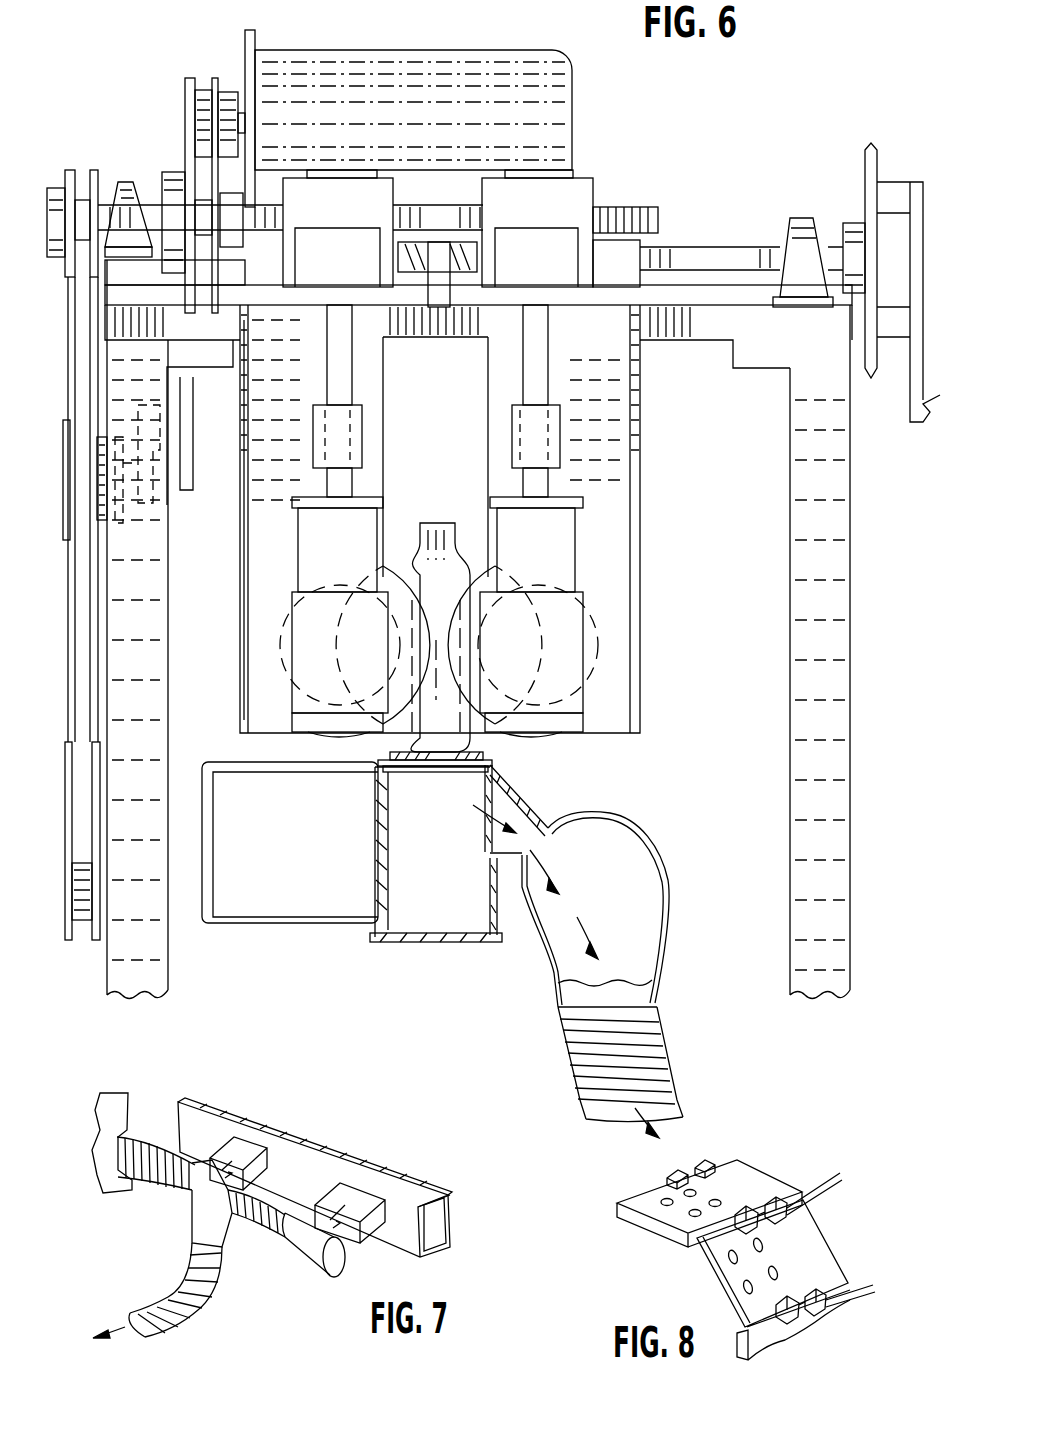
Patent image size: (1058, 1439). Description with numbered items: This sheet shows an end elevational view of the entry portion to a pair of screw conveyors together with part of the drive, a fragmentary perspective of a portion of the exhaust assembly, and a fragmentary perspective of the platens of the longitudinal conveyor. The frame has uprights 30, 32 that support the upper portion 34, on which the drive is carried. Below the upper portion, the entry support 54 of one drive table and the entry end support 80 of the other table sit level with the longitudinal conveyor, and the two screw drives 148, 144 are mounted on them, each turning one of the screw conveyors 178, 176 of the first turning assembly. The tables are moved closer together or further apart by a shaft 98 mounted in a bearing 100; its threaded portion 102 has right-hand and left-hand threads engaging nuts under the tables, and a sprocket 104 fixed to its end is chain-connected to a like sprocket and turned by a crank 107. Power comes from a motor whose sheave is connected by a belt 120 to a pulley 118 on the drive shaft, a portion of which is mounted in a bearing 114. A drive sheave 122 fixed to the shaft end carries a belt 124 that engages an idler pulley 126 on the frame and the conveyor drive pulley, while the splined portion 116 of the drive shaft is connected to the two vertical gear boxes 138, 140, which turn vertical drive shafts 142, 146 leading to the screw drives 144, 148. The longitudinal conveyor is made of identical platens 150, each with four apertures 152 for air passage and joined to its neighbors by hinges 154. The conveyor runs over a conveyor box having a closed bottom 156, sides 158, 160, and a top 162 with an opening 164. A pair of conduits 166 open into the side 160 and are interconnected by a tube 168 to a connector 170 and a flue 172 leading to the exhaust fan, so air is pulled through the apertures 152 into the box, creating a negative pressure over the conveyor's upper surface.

In FIG. 6, the upright 30 is at (140, 975).
In FIG. 6, the upright 32 is at (823, 866).
In FIG. 6, the upper portion 34 is at (687, 350).
In FIG. 6, the entry support 54 is at (260, 487).
In FIG. 6, the entry end support 80 is at (630, 548).
In FIG. 6, the shaft 98 is at (700, 258).
In FIG. 6, the bearing 100 is at (805, 240).
In FIG. 6, the threaded portion 102 is at (410, 266).
In FIG. 6, the sprocket 104 is at (877, 150).
In FIG. 6, the crank 107 is at (915, 425).
In FIG. 6, the bearing 114 is at (125, 205).
In FIG. 6, the splined portion 116 is at (430, 215).
In FIG. 6, the pulley 118 is at (185, 110).
In FIG. 6, the belt 120 is at (70, 850).
In FIG. 6, the drive sheave 122 is at (65, 185).
In FIG. 6, the belt 124 is at (85, 597).
In FIG. 6, the idler pulley 126 is at (65, 518).
In FIG. 6, the vertical gear box 138 is at (560, 205).
In FIG. 6, the vertical gear box 140 is at (320, 200).
In FIG. 6, the vertical drive shaft 142 is at (548, 370).
In FIG. 6, the screw drive 144 is at (555, 545).
In FIG. 6, the vertical drive shaft 146 is at (342, 372).
In FIG. 6, the screw drive 148 is at (365, 530).
In FIG. 6, the platen 150 is at (392, 754).
In FIG. 8, the platen 150 is at (757, 1190).
In FIG. 8, the aperture 152 is at (718, 1200).
In FIG. 8, the hinge 154 is at (787, 1200).
In FIG. 6, the closed bottom 156 is at (410, 943).
In FIG. 6, the side 158 is at (375, 865).
In FIG. 6, the side 160 is at (490, 900).
In FIG. 7, the side 160 is at (410, 1232).
In FIG. 6, the top 162 is at (495, 766).
In FIG. 7, the top 162 is at (437, 1190).
In FIG. 6, the opening 164 is at (425, 775).
In FIG. 7, the opening 164 is at (305, 1150).
In FIG. 6, the conduit 166 is at (525, 805).
In FIG. 7, the conduit 166 is at (237, 1160).
In FIG. 7, the tube 168 is at (263, 1240).
In FIG. 7, the connector 170 is at (208, 1207).
In FIG. 7, the flue 172 is at (188, 1313).
In FIG. 6, the screw conveyor 176 is at (625, 640).
In FIG. 6, the screw conveyor 178 is at (250, 625).